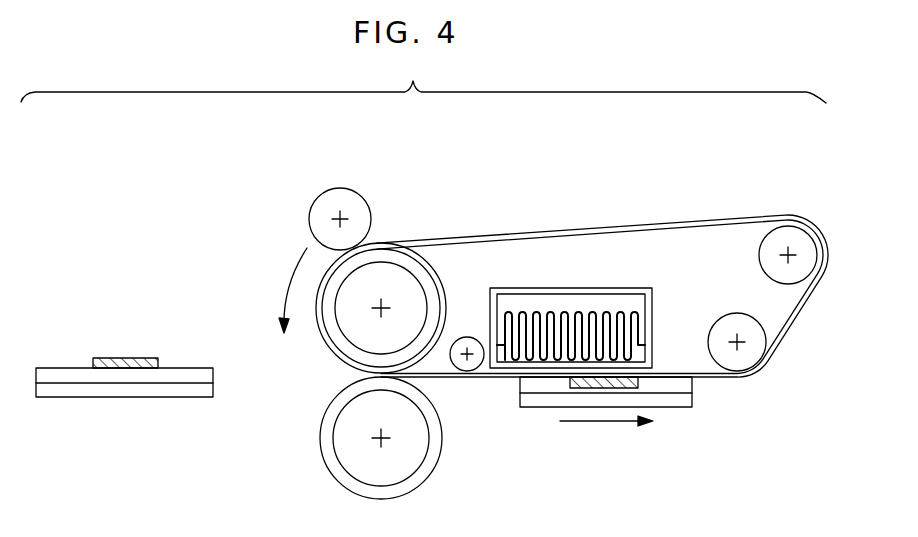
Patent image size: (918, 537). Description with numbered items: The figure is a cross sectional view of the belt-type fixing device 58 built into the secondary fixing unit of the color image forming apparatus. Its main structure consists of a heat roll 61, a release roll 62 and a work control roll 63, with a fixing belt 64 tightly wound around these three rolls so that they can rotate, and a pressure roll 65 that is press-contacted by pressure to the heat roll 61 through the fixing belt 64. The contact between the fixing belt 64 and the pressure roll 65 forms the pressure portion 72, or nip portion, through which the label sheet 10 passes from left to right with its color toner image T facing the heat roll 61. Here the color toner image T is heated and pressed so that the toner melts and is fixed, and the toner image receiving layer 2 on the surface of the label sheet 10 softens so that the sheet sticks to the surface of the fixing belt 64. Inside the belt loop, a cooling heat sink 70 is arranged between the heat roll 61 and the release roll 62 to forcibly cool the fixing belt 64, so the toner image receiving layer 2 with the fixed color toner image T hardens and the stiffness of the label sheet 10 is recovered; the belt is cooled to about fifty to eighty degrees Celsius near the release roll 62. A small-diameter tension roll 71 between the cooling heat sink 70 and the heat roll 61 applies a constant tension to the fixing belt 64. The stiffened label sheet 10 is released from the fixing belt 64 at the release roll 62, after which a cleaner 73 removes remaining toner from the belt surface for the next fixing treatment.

The belt-type fixing device 58 is at (521, 196).
The fixing belt 64 is at (630, 227).
The heat roll 61 is at (349, 336).
The cleaner 73 is at (348, 188).
The tension roll 71 is at (470, 337).
The work control roll 63 is at (804, 269).
The release roll 62 is at (755, 352).
The pressure roll 65 is at (422, 457).
The pressure portion 72 is at (348, 378).
The cooling heat sink 70 is at (598, 288).
The toner image receiving layer 2 is at (692, 387).
The color toner image T is at (588, 382).
The label sheet 10 is at (542, 413).